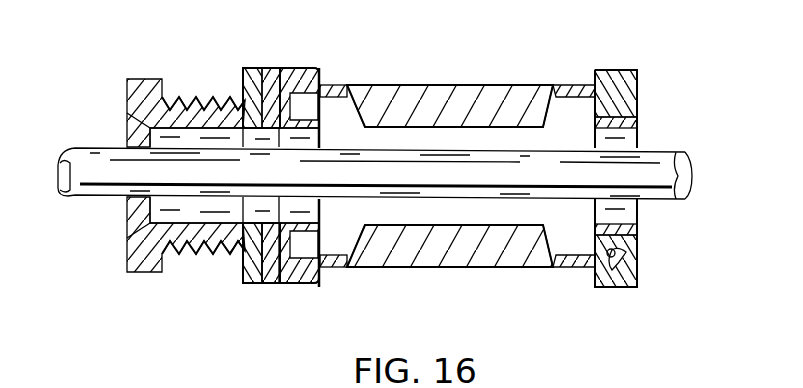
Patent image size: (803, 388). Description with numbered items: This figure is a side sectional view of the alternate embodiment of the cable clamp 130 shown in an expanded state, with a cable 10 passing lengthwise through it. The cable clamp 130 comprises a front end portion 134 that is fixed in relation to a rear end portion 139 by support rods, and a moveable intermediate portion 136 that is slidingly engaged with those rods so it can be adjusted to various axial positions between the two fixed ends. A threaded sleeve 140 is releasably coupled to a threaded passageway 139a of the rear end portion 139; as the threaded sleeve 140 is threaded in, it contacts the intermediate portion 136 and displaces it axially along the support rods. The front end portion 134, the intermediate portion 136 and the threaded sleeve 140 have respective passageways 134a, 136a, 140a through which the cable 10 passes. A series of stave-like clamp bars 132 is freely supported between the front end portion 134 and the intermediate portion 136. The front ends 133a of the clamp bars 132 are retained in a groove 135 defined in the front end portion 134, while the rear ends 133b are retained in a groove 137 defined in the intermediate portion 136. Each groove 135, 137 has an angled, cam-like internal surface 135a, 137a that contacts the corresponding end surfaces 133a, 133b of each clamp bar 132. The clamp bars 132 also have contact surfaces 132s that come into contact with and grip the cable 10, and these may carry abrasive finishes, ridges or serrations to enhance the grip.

The shaft 10 is at (97, 155).
The cable clamp 130 is at (448, 74).
The clamp bars 132 is at (500, 93).
The contact surfaces 132s is at (482, 218).
The front ends 133a is at (575, 85).
The rear ends 133b is at (402, 310).
The front end portion 134 is at (617, 72).
The passageway 134a is at (705, 109).
The groove 135 is at (632, 237).
The cam-like internal surface 135a is at (710, 280).
The intermediate portion 136 is at (303, 68).
The passageway 136a is at (342, 112).
The groove 137 is at (320, 243).
The cam-like internal surface 137a is at (315, 329).
The rear end portion 139 is at (258, 68).
The threaded passageway 139a is at (235, 237).
The threaded sleeve 140 is at (137, 79).
The passageway 140a is at (198, 97).